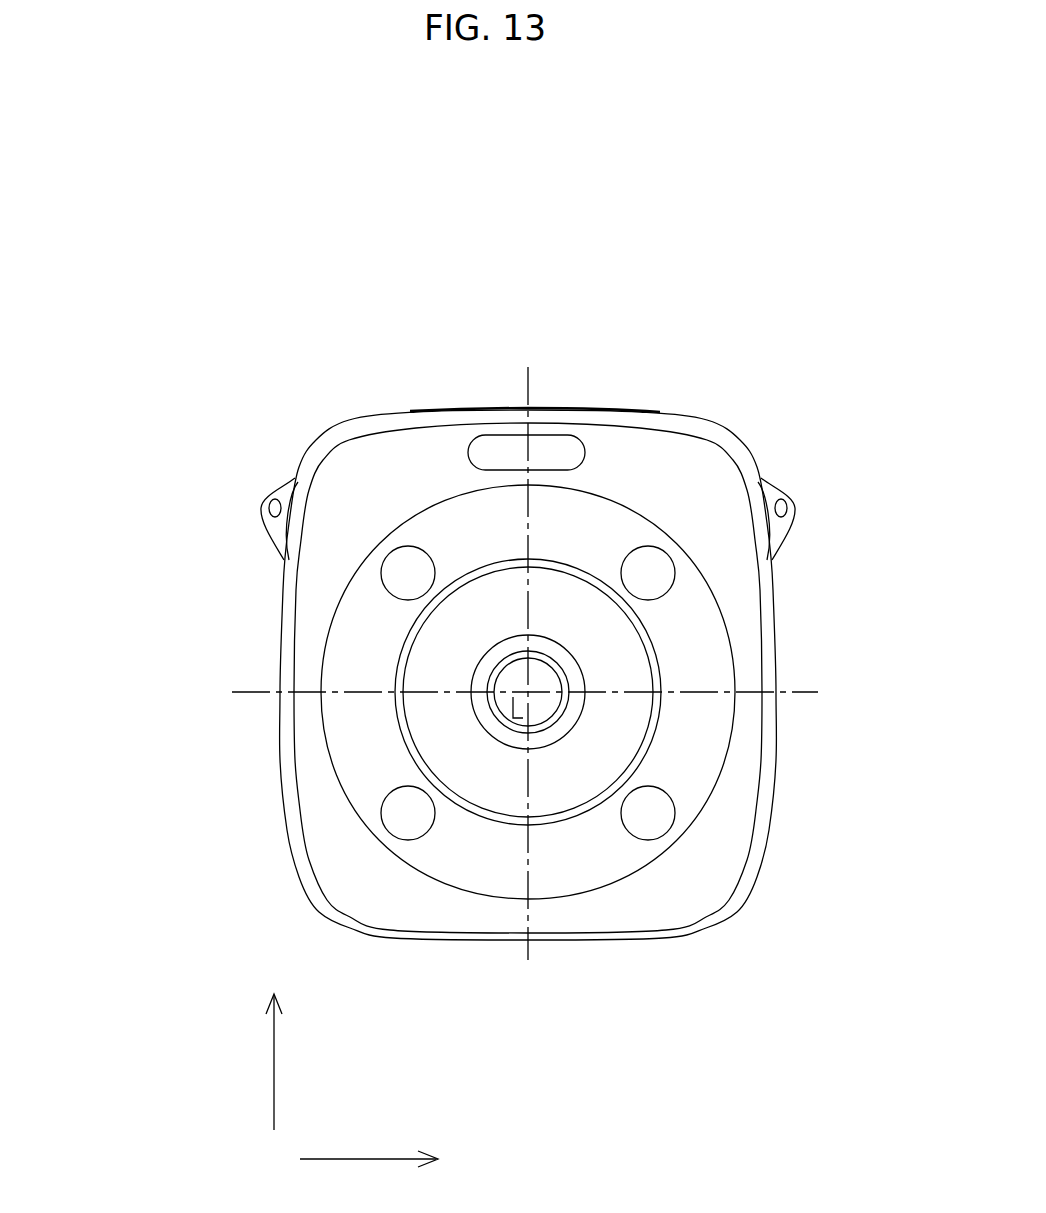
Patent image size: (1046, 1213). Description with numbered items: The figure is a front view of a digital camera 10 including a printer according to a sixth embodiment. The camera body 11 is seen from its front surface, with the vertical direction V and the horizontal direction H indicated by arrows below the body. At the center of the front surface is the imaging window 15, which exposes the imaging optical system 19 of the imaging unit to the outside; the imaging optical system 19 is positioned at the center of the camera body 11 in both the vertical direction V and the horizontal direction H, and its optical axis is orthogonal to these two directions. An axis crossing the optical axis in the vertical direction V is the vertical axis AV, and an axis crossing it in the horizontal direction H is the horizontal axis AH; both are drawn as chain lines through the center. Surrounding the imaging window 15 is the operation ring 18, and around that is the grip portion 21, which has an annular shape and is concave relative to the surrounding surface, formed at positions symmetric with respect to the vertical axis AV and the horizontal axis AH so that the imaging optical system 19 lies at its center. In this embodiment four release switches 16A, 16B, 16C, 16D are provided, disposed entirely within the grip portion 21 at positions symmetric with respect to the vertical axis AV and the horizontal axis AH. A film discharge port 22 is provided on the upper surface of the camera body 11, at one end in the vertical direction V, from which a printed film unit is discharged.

The digital camera including a printer 10 is at (498, 673).
The camera body 11 is at (320, 448).
The imaging window 15 is at (549, 712).
The release switch 16A is at (380, 580).
The release switch 16B is at (664, 573).
The release switch 16C is at (663, 818).
The release switch 16D is at (387, 826).
The operation ring 18 is at (520, 593).
The imaging optical system 19 is at (513, 678).
The grip portion 21 is at (362, 787).
The film discharge port 22 is at (610, 410).
The vertical axis AV is at (530, 390).
The horizontal axis AH is at (790, 692).
The vertical direction V is at (288, 1062).
The horizontal direction H is at (369, 1143).